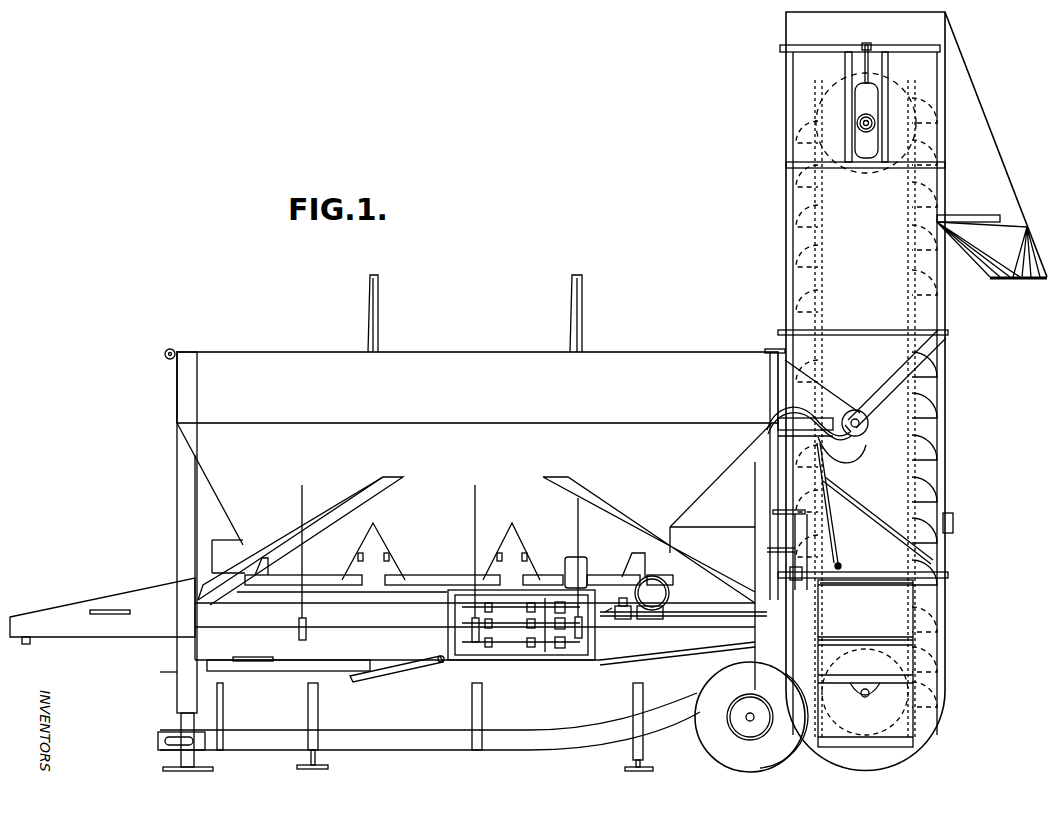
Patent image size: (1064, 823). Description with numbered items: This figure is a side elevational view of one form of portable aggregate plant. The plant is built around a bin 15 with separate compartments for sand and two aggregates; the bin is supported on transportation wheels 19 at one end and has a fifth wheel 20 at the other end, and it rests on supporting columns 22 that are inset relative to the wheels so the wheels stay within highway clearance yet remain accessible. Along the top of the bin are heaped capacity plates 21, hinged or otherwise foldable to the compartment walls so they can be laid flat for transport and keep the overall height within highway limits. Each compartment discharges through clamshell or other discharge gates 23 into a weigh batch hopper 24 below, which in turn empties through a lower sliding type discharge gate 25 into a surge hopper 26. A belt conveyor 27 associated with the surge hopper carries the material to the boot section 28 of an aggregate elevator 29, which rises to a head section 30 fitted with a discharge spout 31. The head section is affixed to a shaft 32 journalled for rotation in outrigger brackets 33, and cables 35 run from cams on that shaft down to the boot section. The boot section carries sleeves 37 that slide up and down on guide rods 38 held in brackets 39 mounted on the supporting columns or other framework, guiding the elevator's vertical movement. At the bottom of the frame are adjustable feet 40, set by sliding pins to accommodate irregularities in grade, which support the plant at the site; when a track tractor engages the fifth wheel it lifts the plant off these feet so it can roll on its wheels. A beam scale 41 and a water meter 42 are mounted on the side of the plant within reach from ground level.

The bin 15 is at (486, 402).
The transportation wheels 19 is at (722, 745).
The fifth wheel 20 is at (68, 607).
The heaped capacity plates 21 is at (378, 318).
The supporting columns 22 is at (186, 520).
The discharge gates 23 is at (333, 572).
The weigh batch hopper 24 is at (348, 653).
The sliding type discharge gate 25 is at (275, 670).
The surge hopper 26 is at (388, 706).
The belt conveyor 27 is at (398, 742).
The boot section 28 is at (913, 612).
The aggregate elevator 29 is at (935, 497).
The head section 30 is at (786, 216).
The discharge spout 31 is at (1012, 272).
The shaft 32 is at (866, 425).
The outrigger brackets 33 is at (830, 398).
The cables 35 is at (829, 478).
The sleeves 37 is at (786, 575).
The guide rods 38 is at (768, 550).
The brackets 39 is at (800, 507).
The adjustable feet 40 is at (205, 770).
The beam scale 41 is at (512, 630).
The water meter 42 is at (662, 594).